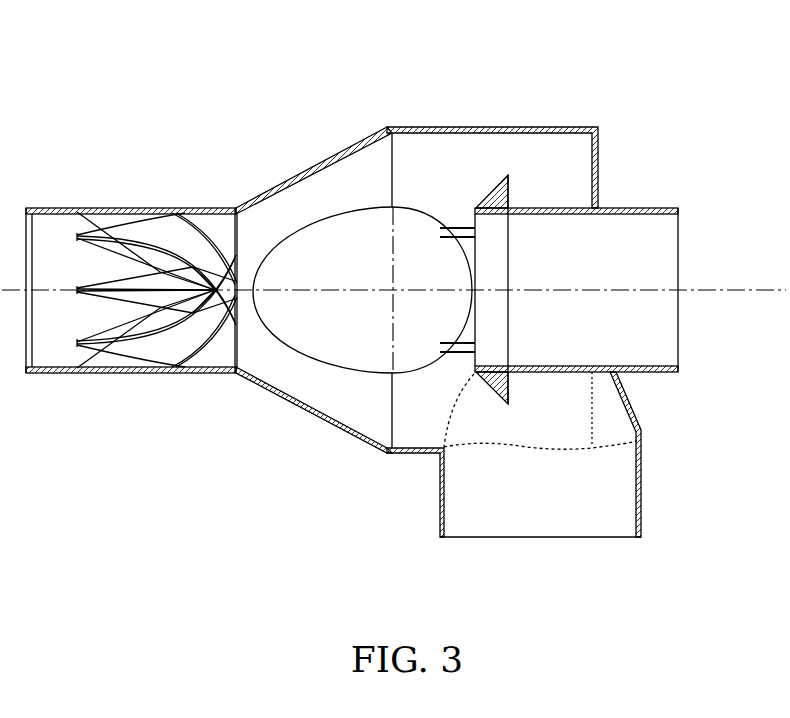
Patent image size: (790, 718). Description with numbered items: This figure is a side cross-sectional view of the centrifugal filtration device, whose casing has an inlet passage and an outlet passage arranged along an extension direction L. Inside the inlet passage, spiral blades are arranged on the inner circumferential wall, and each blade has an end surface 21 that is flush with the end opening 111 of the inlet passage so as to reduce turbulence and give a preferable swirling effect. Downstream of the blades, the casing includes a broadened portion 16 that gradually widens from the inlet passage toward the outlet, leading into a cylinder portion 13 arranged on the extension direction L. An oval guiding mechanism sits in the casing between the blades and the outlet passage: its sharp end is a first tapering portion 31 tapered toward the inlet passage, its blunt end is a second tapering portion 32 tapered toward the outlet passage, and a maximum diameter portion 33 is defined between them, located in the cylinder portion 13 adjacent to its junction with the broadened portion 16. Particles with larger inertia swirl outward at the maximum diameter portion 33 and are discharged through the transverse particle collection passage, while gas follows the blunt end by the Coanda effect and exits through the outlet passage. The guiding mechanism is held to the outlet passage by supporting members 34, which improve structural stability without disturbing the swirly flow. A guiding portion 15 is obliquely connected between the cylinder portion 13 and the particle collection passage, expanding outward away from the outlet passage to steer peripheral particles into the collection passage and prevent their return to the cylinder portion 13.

The cylinder portion 13 is at (415, 127).
The guiding portion 15 is at (640, 410).
The broadened portion 16 is at (330, 157).
The end surface 21 is at (205, 238).
The first tapering portion 31 is at (248, 376).
The second tapering portion 32 is at (460, 227).
The maximum diameter portion 33 is at (387, 347).
The supporting member 34 is at (478, 207).
The end opening 111 is at (237, 237).
The extension direction L is at (710, 265).